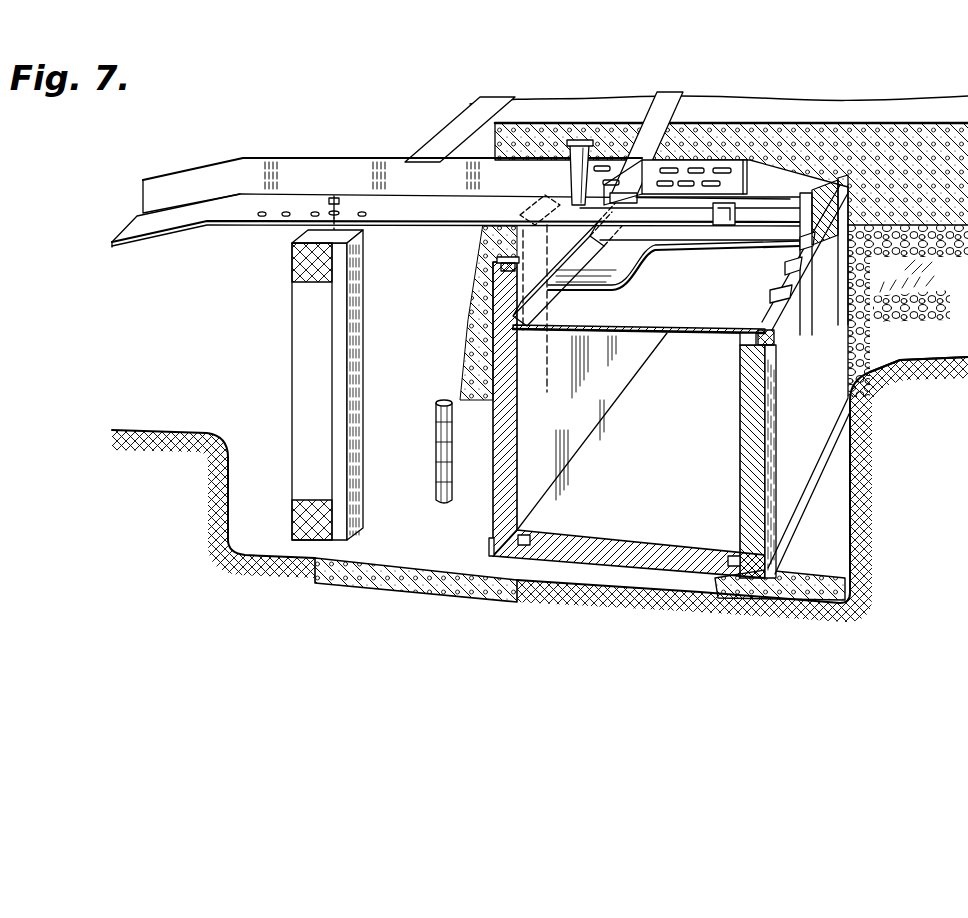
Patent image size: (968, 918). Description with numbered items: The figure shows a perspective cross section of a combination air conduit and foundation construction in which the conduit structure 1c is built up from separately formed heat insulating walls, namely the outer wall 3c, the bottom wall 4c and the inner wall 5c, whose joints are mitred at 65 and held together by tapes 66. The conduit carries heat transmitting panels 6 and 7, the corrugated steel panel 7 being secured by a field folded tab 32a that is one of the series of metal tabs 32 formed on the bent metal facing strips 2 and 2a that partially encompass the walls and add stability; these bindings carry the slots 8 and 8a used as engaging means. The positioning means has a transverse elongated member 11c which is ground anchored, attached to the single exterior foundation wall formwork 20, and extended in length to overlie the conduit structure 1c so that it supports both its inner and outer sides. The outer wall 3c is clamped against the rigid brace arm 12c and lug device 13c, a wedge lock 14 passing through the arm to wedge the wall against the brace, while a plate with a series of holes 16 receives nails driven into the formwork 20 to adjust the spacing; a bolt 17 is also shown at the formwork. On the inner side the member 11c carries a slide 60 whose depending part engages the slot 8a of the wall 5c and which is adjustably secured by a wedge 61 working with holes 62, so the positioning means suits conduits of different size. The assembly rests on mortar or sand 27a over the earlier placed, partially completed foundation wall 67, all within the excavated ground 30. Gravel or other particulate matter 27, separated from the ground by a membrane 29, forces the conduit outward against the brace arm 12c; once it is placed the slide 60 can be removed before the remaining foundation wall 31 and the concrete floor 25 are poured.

The conduit structure 1c is at (592, 431).
The metal facing strip 2 is at (498, 258).
The metal facing strip 2a is at (742, 340).
The conduit wall 3c is at (528, 498).
The conduit wall 4c is at (636, 545).
The conduit wall 5c is at (742, 434).
The heat transmitting panel 6 is at (688, 330).
The heat transmitting panel 7 is at (640, 256).
The slot 8 is at (500, 268).
The slot 8a is at (774, 340).
The transverse elongated member 11c is at (320, 160).
The brace arm 12c is at (549, 393).
The lug device 13c is at (567, 260).
The wedge lock 14 is at (574, 170).
The holes 16 is at (262, 217).
The bolt 17 is at (335, 197).
The foundation wall formwork 20 is at (347, 376).
The concrete floor 25 is at (788, 123).
The particulate material 27 is at (848, 319).
The mortar or sand 27a is at (810, 576).
The membrane 29 is at (912, 359).
The ground 30 is at (157, 428).
The foundation wall 31 is at (570, 123).
The metal tabs 32 is at (782, 288).
The field folded tab 32a is at (835, 250).
The slide 60 is at (796, 228).
The wedge 61 is at (616, 206).
The holes 62 is at (710, 184).
The mitred joints 65 is at (530, 536).
The tapes 66 is at (489, 548).
The partially completed foundation wall 67 is at (407, 565).